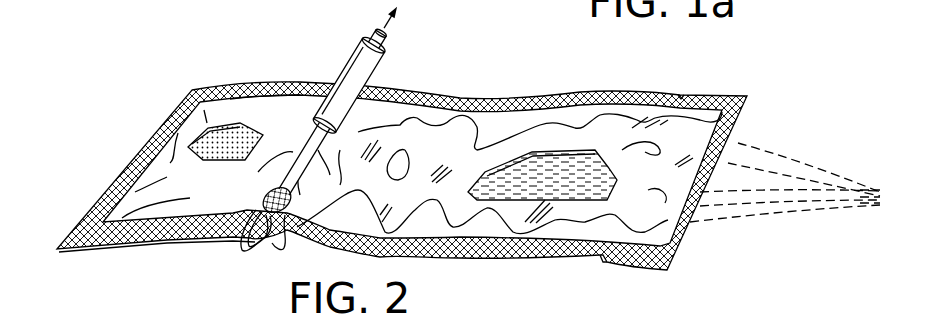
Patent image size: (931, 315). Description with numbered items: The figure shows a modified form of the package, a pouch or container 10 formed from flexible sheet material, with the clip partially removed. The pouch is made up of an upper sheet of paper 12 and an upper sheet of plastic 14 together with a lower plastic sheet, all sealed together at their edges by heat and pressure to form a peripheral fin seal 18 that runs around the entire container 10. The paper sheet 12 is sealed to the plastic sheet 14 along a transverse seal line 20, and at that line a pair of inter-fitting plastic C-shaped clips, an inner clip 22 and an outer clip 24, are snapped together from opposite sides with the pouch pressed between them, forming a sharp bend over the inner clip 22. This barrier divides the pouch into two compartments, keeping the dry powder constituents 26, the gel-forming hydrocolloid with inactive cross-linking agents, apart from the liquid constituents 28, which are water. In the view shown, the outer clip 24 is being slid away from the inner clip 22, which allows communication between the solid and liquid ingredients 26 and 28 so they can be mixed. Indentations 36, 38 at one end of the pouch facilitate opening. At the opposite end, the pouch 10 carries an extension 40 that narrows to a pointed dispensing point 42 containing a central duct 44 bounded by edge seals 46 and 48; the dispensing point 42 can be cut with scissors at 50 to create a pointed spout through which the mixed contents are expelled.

The container 10 is at (213, 76).
The upper sheet of paper 12 is at (255, 108).
The upper sheet of plastic 14 is at (492, 132).
The peripheral fin seal 18 is at (178, 107).
The transverse seal line 20 is at (290, 155).
The inner clip 22 is at (253, 245).
The outer clip 24 is at (363, 57).
The dry powder constituents 26 is at (230, 133).
The liquid constituents 28 is at (553, 170).
The indentation 36 is at (682, 97).
The indentation 38 is at (600, 257).
The extension 40 is at (783, 165).
The dispensing point 42 is at (843, 183).
The central duct 44 is at (742, 182).
The edge seal 46 is at (800, 173).
The edge seal 48 is at (800, 187).
The cutting location 50 is at (858, 230).